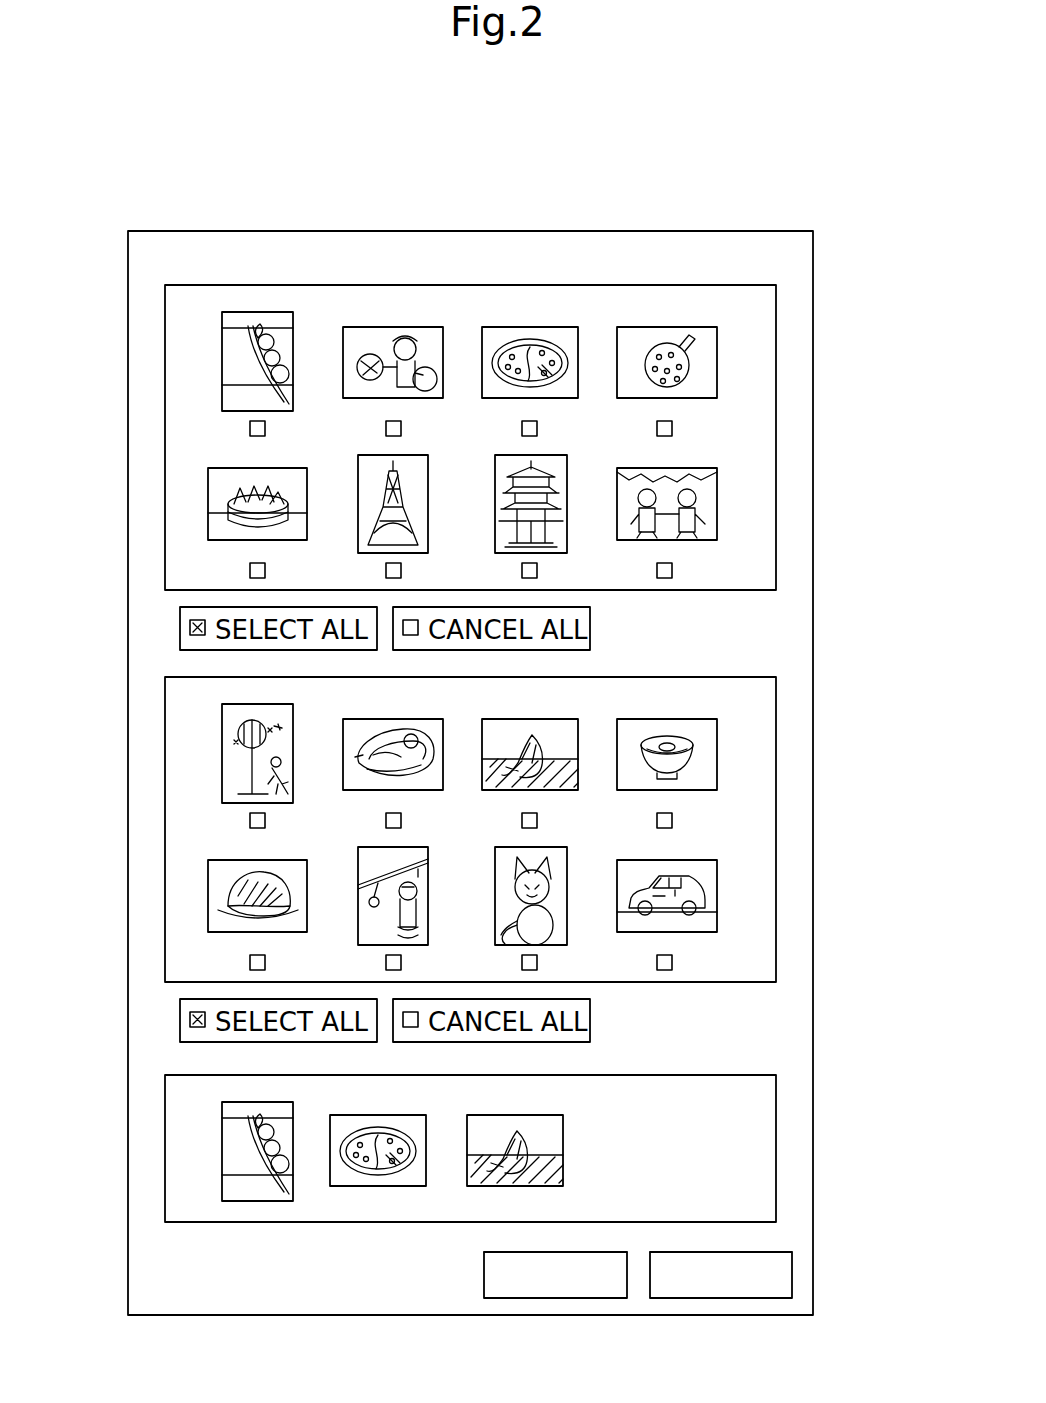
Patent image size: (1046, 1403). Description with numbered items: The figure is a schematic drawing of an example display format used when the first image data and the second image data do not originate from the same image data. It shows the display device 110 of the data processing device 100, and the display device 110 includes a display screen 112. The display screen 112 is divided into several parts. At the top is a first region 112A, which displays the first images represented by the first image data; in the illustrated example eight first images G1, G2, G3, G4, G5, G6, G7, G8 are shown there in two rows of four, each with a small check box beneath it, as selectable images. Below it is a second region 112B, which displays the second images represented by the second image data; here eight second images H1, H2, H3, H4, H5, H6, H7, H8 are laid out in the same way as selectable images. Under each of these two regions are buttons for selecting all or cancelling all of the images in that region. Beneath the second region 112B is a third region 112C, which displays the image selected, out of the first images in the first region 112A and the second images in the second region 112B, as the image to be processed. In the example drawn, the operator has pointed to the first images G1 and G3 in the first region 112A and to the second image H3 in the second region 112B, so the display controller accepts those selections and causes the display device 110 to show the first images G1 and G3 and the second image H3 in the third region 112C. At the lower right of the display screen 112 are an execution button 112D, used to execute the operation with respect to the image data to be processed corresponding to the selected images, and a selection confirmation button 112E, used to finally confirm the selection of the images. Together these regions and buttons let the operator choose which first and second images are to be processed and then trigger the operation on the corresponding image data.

The data processing device 100 is at (850, 220).
The display device 110 is at (874, 268).
The display screen 112 is at (813, 312).
The first region 112A is at (776, 380).
The second region 112B is at (776, 785).
The third region 112C is at (776, 1120).
The execution button 112D is at (525, 1299).
The selection confirmation button 112E is at (691, 1299).
The first image G1 is at (222, 344).
The first image G2 is at (389, 327).
The first image G3 is at (522, 327).
The first image G4 is at (661, 327).
The first image G5 is at (276, 468).
The first image G6 is at (416, 455).
The first image G7 is at (554, 455).
The first image G8 is at (691, 468).
The second image H1 is at (222, 736).
The second image H2 is at (389, 719).
The second image H3 is at (522, 719).
The second image H4 is at (661, 719).
The second image H5 is at (276, 860).
The second image H6 is at (416, 847).
The second image H7 is at (554, 847).
The second image H8 is at (691, 860).